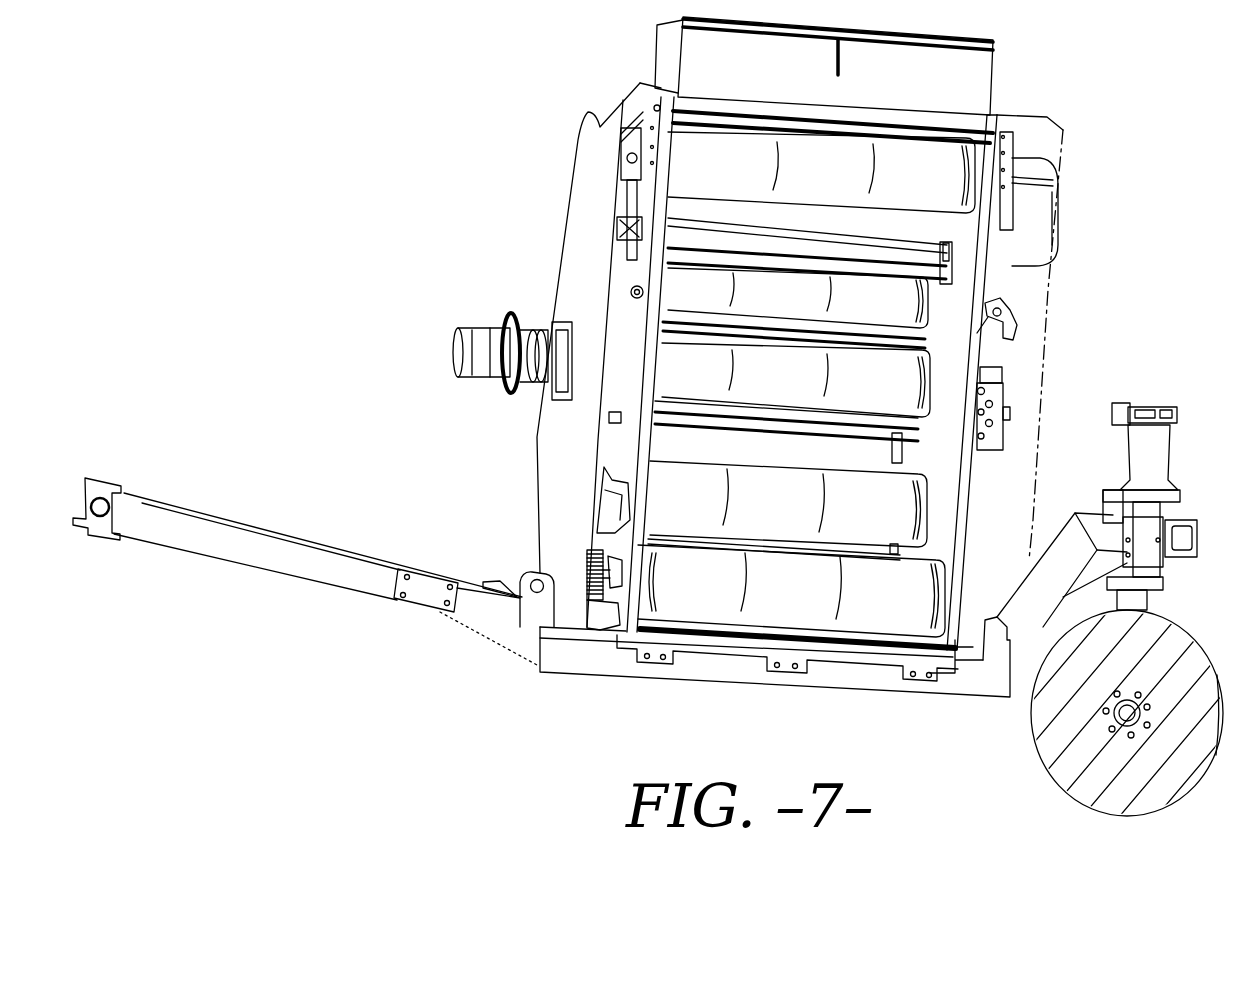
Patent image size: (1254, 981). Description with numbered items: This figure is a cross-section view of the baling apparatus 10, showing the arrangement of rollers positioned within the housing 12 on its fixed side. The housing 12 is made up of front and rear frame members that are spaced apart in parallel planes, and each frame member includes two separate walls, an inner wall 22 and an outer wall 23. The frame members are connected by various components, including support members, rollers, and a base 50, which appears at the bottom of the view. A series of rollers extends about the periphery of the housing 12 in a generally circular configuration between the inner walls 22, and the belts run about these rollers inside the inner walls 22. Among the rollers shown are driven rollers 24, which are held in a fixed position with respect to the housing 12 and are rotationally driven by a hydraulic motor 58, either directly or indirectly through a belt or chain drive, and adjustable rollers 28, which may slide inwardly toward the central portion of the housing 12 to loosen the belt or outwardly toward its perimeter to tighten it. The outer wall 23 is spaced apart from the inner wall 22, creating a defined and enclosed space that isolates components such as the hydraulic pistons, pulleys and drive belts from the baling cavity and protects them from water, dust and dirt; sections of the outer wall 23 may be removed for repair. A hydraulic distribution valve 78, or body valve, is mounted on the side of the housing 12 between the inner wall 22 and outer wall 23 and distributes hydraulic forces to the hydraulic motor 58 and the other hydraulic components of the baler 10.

The baling apparatus 10 is at (1143, 170).
The housing 12 is at (953, 310).
The inner wall 22 is at (648, 112).
The outer wall 23 is at (597, 203).
The driven rollers 24 is at (670, 358).
The adjustable rollers 28 is at (920, 160).
The base 50 is at (868, 675).
The hydraulic motor 58 is at (500, 330).
The hydraulic distribution valve 78 is at (1008, 392).